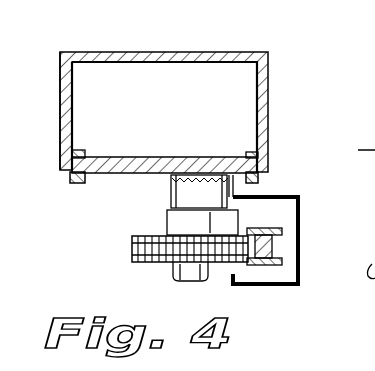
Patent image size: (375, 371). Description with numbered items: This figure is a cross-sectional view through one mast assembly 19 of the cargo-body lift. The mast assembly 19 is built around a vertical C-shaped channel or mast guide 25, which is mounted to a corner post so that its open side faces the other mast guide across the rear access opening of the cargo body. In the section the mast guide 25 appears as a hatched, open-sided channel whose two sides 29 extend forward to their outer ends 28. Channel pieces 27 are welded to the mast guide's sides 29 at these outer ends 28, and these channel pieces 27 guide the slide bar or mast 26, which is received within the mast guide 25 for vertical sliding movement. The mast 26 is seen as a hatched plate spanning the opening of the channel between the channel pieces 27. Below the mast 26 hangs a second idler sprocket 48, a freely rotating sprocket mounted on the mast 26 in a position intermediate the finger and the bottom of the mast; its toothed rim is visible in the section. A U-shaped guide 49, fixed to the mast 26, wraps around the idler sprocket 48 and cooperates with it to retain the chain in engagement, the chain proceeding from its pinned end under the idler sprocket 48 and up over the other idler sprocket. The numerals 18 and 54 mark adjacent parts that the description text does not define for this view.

The weighing pan assembly 18 is at (306, 58).
The mast assembly 19 is at (112, 217).
The mast guide 25 is at (269, 80).
The mast 26 is at (130, 165).
The channel pieces 27 is at (82, 152).
The outer ends 28 is at (70, 172).
The sides 29 is at (60, 119).
The second idler sprocket 48 is at (133, 252).
The U-shaped guide 49 is at (300, 197).
The lever 54 is at (374, 136).